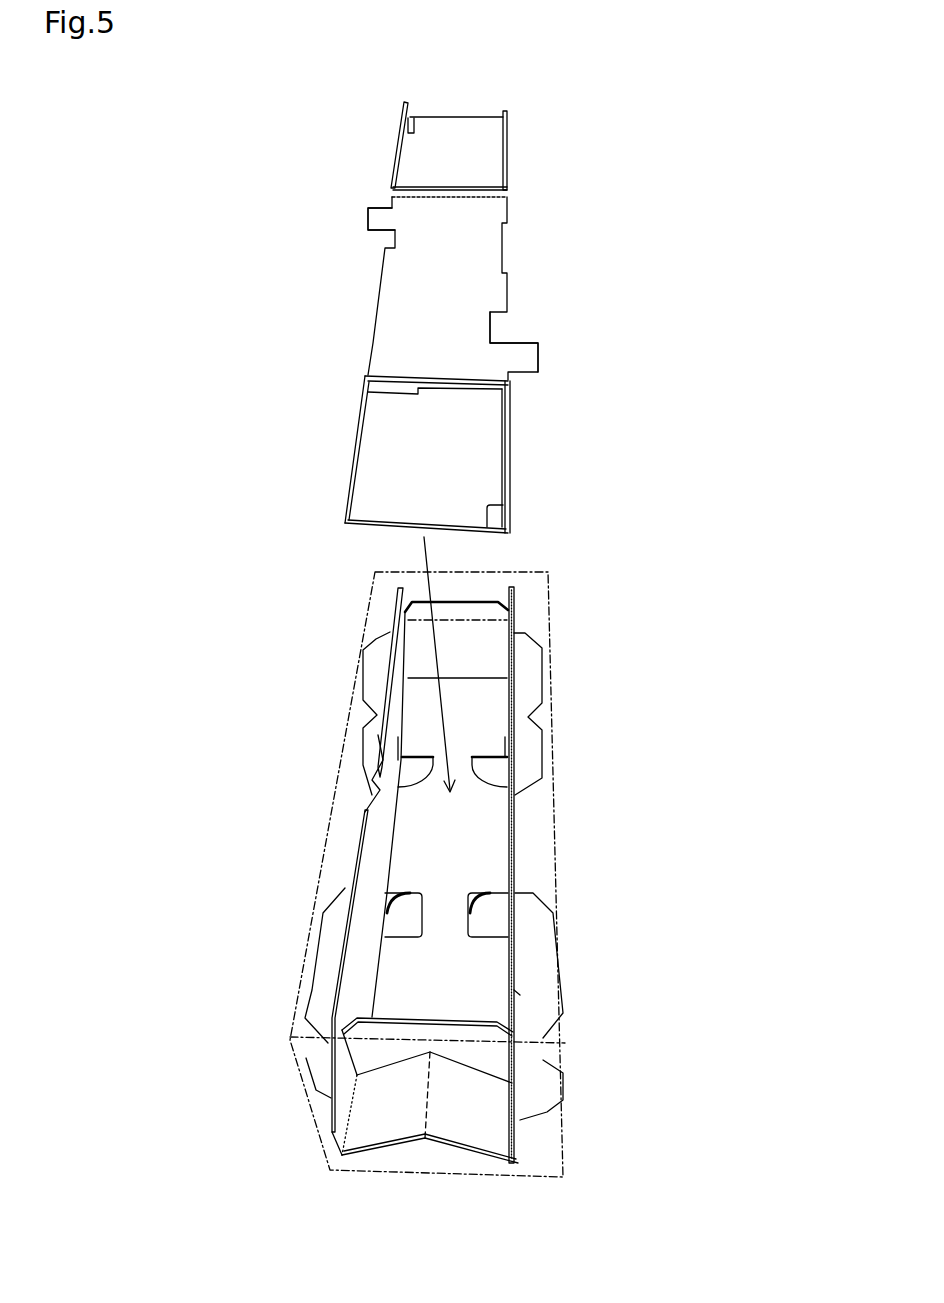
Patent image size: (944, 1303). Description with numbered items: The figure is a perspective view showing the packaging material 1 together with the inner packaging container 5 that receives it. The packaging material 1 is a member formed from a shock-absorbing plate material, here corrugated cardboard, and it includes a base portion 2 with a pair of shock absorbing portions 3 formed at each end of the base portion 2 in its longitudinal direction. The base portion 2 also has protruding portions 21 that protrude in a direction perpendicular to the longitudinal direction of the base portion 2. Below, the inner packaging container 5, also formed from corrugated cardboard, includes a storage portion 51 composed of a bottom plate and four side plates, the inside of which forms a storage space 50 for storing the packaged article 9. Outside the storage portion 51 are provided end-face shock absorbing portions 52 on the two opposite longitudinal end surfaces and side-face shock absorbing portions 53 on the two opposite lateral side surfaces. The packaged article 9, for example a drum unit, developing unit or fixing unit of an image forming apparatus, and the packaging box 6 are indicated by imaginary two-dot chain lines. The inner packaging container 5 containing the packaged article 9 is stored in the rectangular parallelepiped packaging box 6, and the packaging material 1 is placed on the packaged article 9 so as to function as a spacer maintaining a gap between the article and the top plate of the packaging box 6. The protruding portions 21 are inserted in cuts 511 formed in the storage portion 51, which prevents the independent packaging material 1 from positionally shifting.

The packaging material 1 is at (548, 172).
The base portion 2 is at (424, 318).
The protruding portions 21 is at (380, 218).
The shock absorbing portions 3 is at (388, 154).
The inner packaging container 5 is at (519, 577).
The storage space 50 is at (492, 645).
The storage portion 51 is at (357, 830).
The cuts 511 is at (373, 745).
The end-face shock absorbing portions 52 is at (398, 600).
The side-face shock absorbing portions 53 is at (358, 748).
The packaged article 9 is at (397, 677).
The packaging box 6 is at (558, 817).